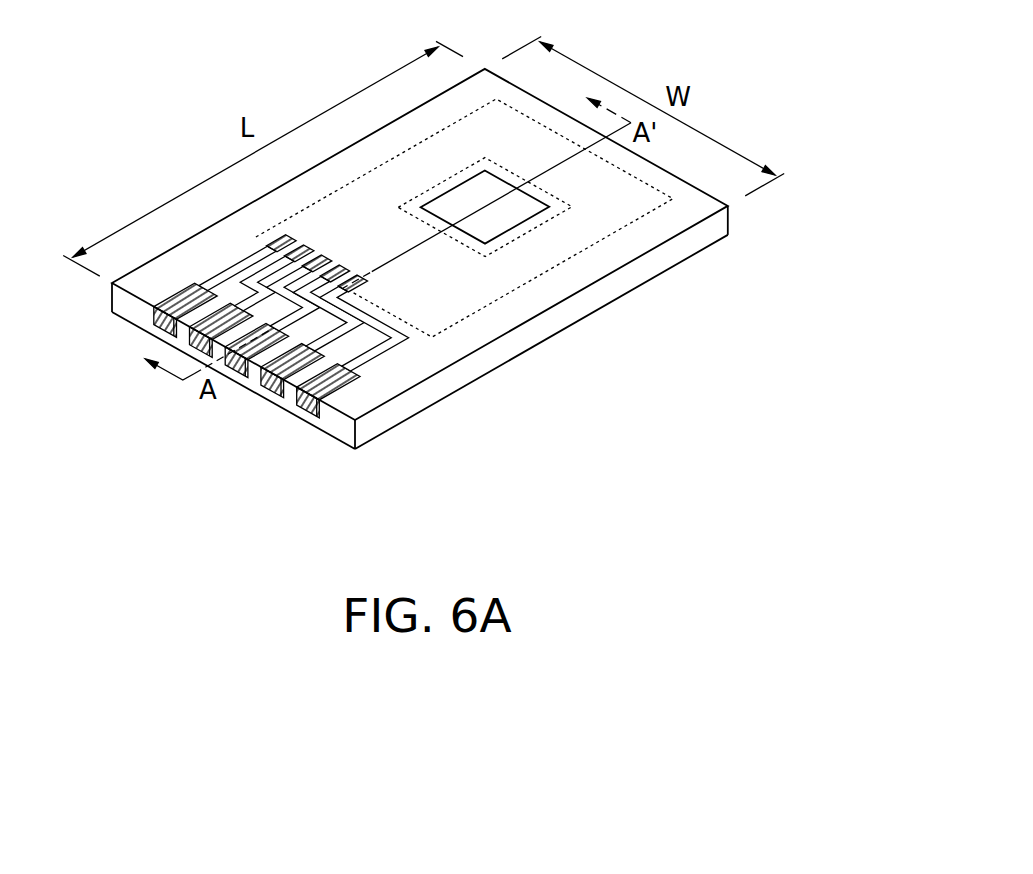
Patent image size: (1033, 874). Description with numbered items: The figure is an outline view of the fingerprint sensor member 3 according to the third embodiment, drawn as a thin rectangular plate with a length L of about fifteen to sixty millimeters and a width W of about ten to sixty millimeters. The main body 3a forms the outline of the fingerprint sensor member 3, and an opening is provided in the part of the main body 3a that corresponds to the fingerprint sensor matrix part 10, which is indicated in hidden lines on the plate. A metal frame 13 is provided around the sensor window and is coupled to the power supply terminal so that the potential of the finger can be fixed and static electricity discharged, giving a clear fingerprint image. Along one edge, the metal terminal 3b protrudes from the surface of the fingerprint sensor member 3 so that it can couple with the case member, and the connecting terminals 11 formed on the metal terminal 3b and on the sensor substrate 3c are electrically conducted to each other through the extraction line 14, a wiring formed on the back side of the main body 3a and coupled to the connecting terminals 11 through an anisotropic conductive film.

The fingerprint sensor member 3 is at (785, 73).
The main body 3a is at (402, 404).
The metal terminal 3b is at (294, 464).
The sensor substrate 3c is at (655, 212).
The fingerprint sensor matrix part 10 is at (590, 212).
The connecting terminals 11 is at (296, 229).
The metal frame 13 is at (523, 223).
The extraction line 14 is at (226, 271).